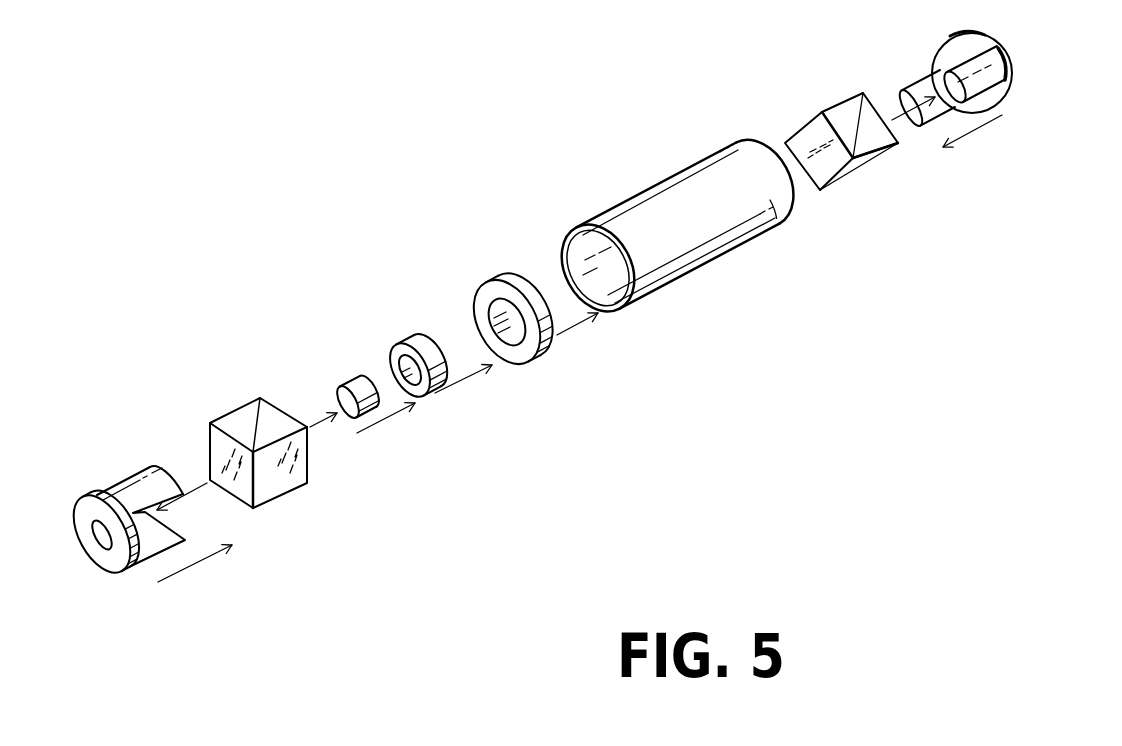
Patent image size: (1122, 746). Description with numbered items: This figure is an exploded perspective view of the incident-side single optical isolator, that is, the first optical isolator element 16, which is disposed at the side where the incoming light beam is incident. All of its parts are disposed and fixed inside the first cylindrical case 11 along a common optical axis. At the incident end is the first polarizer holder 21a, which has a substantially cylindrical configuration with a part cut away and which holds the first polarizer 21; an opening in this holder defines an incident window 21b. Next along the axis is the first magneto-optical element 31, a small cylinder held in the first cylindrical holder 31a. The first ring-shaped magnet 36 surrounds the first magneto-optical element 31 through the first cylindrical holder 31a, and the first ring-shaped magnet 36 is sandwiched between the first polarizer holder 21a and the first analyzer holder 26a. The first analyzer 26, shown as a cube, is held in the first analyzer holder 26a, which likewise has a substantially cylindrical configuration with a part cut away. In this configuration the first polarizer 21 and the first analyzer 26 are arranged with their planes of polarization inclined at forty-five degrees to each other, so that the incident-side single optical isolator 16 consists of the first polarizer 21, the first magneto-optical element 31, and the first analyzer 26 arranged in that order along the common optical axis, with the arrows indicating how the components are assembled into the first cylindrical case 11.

The first cylindrical case 11 is at (710, 243).
The first optical isolator element 16 is at (753, 460).
The first polarizer 21 is at (293, 480).
The first polarizer holder 21a is at (127, 477).
The incident window 21b is at (110, 548).
The first analyzer 26 is at (835, 163).
The first analyzer holder 26a is at (998, 63).
The first magneto-optical element 31 is at (350, 419).
The first cylindrical holder 31a is at (428, 394).
The first ring-shaped magnet 36 is at (548, 343).